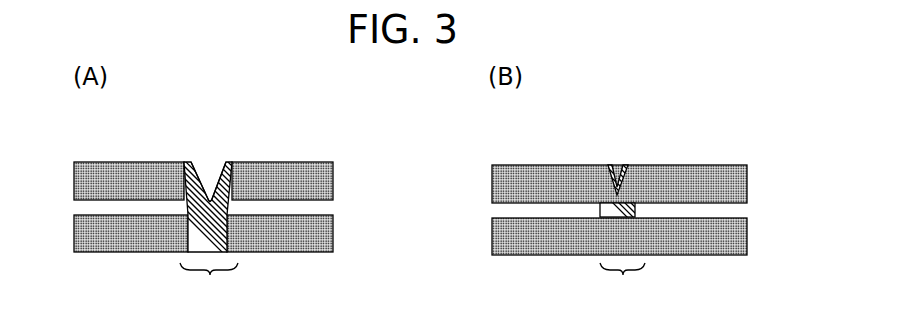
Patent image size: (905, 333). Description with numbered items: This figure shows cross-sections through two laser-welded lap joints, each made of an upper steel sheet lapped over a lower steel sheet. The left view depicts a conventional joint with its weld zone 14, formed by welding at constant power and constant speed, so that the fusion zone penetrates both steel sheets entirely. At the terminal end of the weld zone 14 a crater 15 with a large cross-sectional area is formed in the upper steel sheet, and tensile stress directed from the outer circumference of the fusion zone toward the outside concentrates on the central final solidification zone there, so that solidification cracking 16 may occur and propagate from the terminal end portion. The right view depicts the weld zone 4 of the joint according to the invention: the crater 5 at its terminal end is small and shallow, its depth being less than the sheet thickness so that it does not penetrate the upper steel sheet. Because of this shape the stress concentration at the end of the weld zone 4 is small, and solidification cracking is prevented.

The weld zone 4 is at (636, 229).
The crater 5 is at (623, 168).
The weld zone 14 is at (209, 287).
The crater 15 is at (210, 180).
The solidification cracking 16 is at (242, 248).